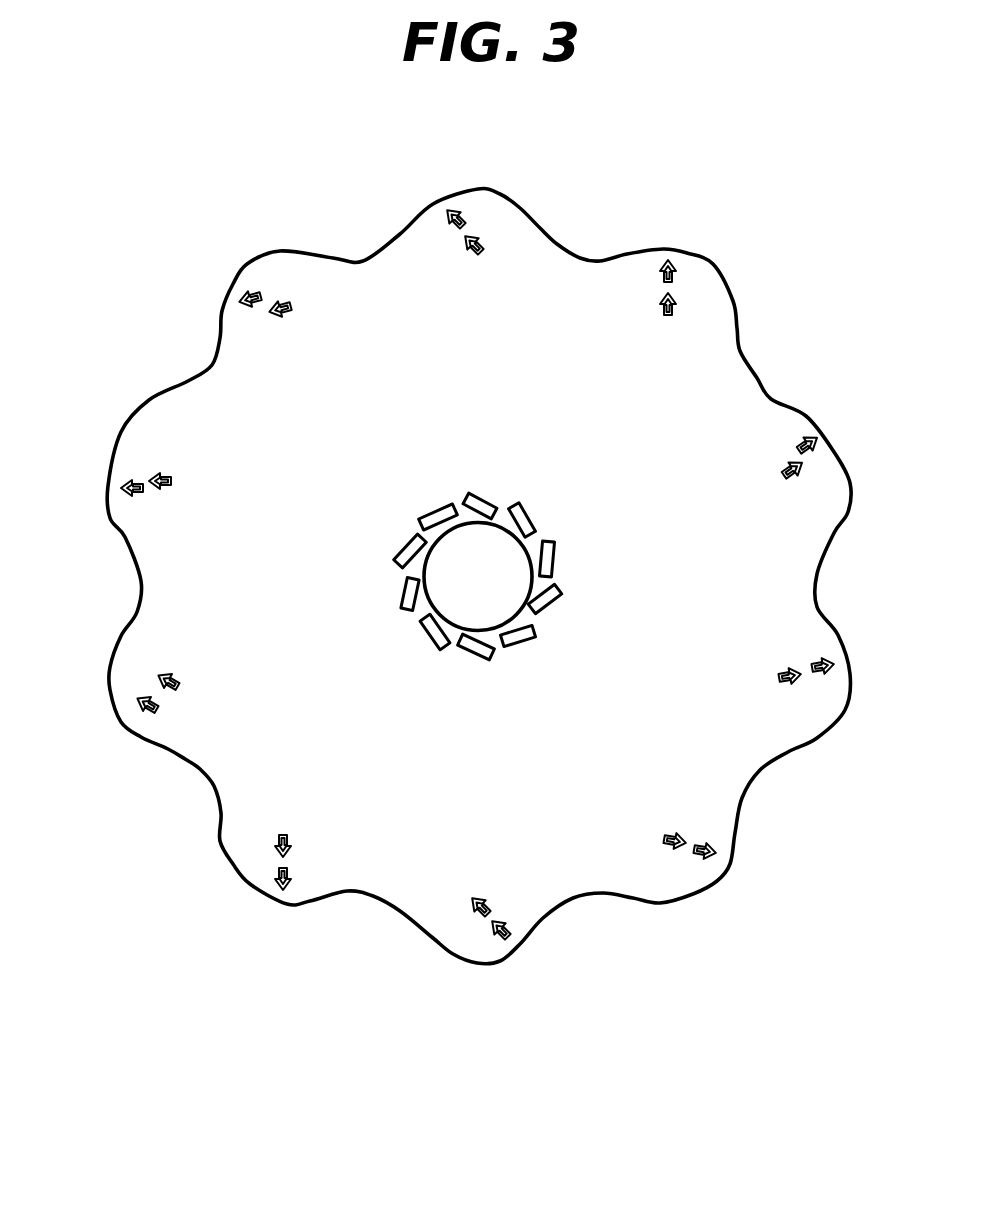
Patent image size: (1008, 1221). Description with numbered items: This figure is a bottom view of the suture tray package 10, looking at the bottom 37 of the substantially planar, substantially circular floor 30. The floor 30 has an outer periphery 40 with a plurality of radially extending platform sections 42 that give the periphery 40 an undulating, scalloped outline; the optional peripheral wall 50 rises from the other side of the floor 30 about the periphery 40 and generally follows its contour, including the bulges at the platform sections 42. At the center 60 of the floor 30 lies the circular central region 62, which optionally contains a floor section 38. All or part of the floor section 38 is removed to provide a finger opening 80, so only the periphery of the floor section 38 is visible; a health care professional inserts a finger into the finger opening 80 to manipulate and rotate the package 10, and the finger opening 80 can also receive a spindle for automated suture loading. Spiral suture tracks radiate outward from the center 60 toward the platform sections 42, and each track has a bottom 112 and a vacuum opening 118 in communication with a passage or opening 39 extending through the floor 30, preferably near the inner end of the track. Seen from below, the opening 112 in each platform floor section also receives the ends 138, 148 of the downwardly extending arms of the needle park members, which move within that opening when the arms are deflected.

The suture tray package 10 is at (758, 150).
The floor 30 is at (233, 387).
The bottom 37 is at (682, 403).
The floor section 38 is at (535, 560).
The passage or opening 39 is at (527, 518).
The outer periphery 40 is at (578, 252).
The platform sections 42 is at (470, 190).
The peripheral wall 50 is at (233, 268).
The center 60 is at (462, 587).
The central region 62 is at (462, 587).
The finger opening 80 is at (490, 593).
The bottom of suture track / opening in floor section 112 is at (677, 853).
The vacuum opening 118 is at (483, 570).
The end of downwardly extending arm 138 is at (283, 887).
The end of downwardly extending arm 148 is at (483, 920).